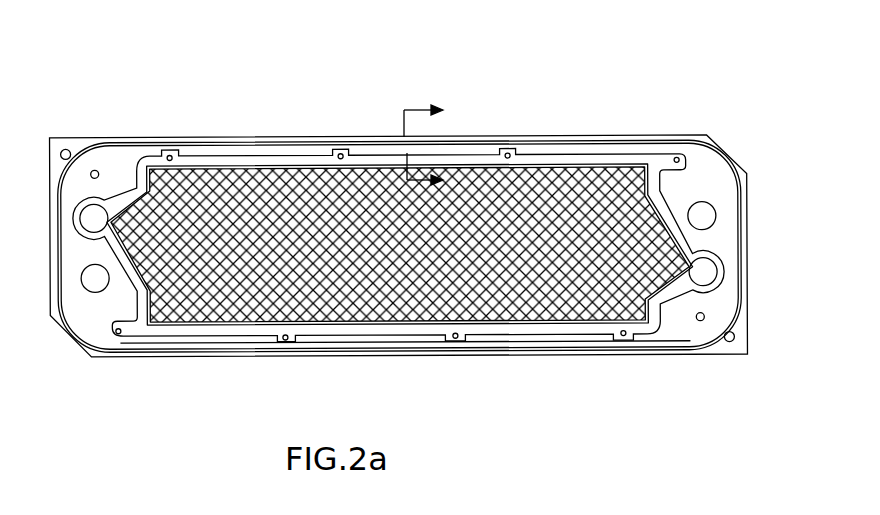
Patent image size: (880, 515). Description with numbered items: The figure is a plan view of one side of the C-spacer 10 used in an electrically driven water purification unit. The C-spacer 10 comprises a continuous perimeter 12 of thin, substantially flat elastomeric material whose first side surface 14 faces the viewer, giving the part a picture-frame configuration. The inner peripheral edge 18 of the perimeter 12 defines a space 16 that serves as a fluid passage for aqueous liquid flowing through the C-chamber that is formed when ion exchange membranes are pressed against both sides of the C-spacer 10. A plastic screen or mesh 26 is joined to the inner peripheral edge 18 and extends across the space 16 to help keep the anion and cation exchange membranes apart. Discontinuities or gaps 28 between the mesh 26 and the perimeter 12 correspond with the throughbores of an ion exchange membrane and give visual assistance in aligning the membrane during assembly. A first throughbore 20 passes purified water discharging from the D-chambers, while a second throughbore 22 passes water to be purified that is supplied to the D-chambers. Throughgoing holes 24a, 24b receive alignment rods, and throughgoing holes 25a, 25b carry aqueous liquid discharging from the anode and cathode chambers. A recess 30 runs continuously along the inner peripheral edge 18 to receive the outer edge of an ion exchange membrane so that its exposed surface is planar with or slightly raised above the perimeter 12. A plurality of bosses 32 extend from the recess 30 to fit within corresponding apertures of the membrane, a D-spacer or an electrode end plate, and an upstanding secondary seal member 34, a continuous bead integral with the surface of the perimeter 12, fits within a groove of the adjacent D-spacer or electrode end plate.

The C-spacer 10 is at (464, 68).
The perimeter 12 is at (688, 183).
The first side surface 14 is at (334, 150).
The space 16 is at (612, 190).
The inner peripheral edge 18 is at (258, 180).
The first throughbore 20 is at (704, 217).
The second throughbore 22 is at (97, 283).
The throughgoing hole 24a is at (730, 342).
The throughgoing hole 24b is at (66, 152).
The throughgoing hole 25a is at (700, 322).
The throughgoing hole 25b is at (95, 172).
The mesh 26 is at (481, 188).
The discontinuities 28 is at (92, 215).
The recess 30 is at (598, 162).
The bosses 32 is at (170, 156).
The secondary seal member 34 is at (547, 350).